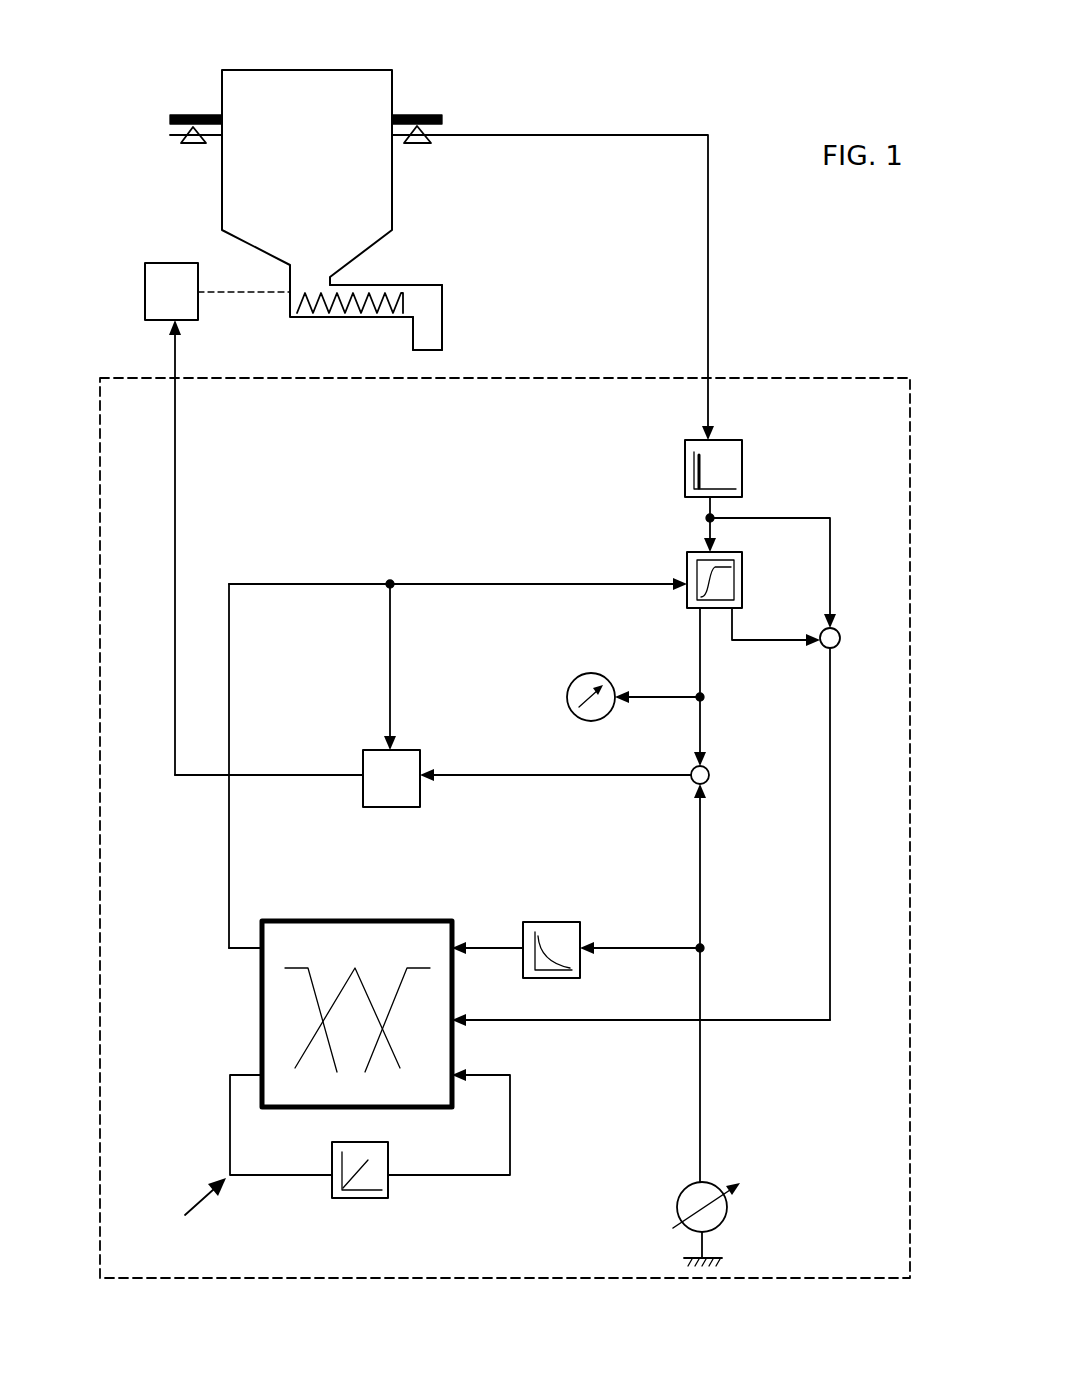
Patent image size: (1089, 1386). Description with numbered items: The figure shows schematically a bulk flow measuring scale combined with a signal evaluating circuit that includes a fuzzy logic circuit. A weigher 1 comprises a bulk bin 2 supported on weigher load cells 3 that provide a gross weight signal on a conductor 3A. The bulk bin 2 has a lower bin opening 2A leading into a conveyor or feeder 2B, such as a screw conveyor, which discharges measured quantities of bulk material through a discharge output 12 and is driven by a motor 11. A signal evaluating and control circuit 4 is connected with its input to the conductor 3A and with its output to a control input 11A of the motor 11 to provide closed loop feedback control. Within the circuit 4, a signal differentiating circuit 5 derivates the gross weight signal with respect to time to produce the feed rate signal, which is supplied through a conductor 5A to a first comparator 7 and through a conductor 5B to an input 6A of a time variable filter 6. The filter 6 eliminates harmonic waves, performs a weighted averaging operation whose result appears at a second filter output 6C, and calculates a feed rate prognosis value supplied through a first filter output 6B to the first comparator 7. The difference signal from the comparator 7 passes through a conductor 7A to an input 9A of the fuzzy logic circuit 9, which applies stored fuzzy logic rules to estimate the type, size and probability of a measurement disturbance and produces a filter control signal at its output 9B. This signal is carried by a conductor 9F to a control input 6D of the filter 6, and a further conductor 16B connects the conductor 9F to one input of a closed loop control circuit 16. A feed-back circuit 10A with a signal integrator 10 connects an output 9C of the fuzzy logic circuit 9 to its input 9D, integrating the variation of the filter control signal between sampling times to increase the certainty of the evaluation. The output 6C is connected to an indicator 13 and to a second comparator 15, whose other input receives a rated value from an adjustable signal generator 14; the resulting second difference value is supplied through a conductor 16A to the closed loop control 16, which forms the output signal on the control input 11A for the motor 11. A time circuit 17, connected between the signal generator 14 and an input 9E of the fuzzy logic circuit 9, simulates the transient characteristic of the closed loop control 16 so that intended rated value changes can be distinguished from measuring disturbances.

The weigher 1 is at (286, 52).
The bulk bin 2 is at (350, 82).
The lower bin opening 2A is at (312, 273).
The conveyor or feeder 2B is at (355, 310).
The weigher load cells 3 is at (517, 100).
The conductor 3A is at (508, 136).
The signal evaluating and control circuit 4 is at (667, 376).
The signal differentiating circuit 5 is at (688, 450).
The conductor 5A is at (795, 518).
The conductor 5B is at (706, 528).
The time variable filter 6 is at (690, 550).
The filter input 6A is at (716, 547).
The first filter output 6B is at (748, 642).
The second filter output 6C is at (700, 660).
The control input 6D is at (680, 590).
The first comparator 7 is at (857, 650).
The conductor 7A is at (830, 667).
The fuzzy logic circuit 9 is at (358, 932).
The input 9A is at (508, 1020).
The output 9B is at (242, 950).
The output 9C is at (240, 1075).
The input 9D is at (492, 1075).
The input 9E is at (510, 950).
The conductor 9F is at (229, 717).
The signal integrator 10 is at (383, 1162).
The feed-back circuit 10A is at (183, 1208).
The motor 11 is at (145, 297).
The control input 11A is at (175, 347).
The discharge output 12 is at (433, 333).
The indicator 13 is at (573, 680).
The adjustable signal generator 14 is at (789, 1218).
The second comparator 15 is at (762, 808).
The closed loop control circuit 16 is at (402, 766).
The conductor 16A is at (452, 775).
The conductor 16B is at (390, 642).
The time circuit 17 is at (548, 920).